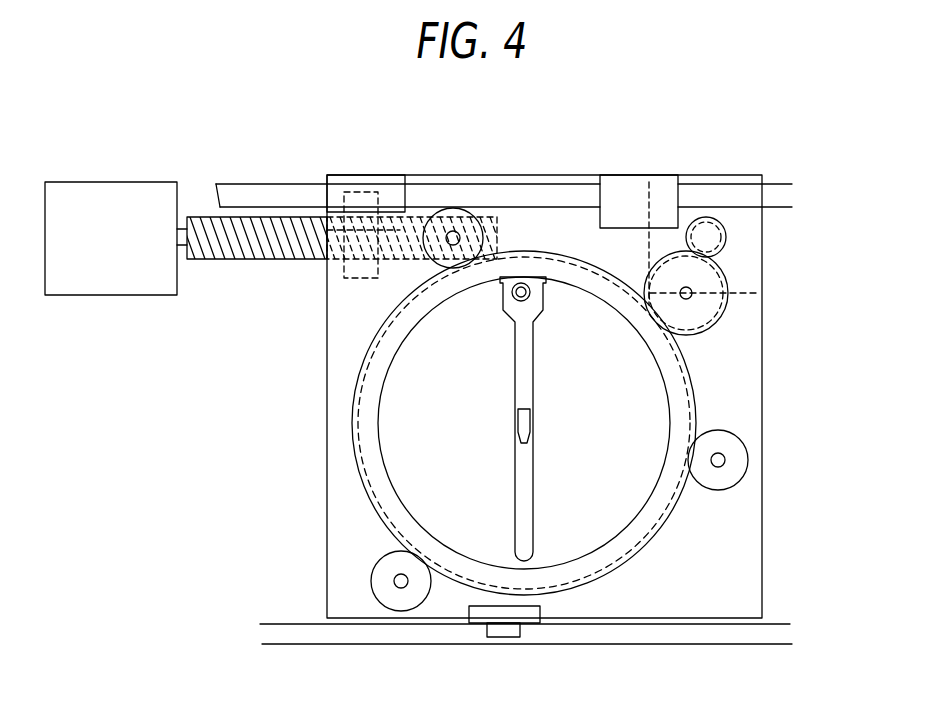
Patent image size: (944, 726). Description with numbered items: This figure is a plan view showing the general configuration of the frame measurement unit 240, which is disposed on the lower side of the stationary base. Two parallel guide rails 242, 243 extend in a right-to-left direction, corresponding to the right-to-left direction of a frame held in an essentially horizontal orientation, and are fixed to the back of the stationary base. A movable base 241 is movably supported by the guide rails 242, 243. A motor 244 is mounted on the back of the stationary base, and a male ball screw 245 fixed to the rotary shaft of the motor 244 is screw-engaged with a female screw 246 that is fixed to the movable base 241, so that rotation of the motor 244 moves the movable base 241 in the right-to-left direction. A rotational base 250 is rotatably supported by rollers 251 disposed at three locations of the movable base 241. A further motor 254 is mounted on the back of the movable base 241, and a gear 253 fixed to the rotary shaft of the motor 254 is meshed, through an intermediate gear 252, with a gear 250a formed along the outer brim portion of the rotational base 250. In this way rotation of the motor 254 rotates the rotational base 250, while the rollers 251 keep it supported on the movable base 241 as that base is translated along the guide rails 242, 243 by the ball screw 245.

The frame measurement unit 240 is at (238, 502).
The movable base 241 is at (745, 357).
The guide rail 242 is at (551, 192).
The guide rail 243 is at (602, 634).
The motor 244 is at (100, 216).
The male ball screw 245 is at (245, 259).
The female screw 246 is at (360, 284).
The rotational base 250 is at (683, 408).
The gear 250a is at (668, 527).
The roller 251 is at (453, 208).
The gear 252 is at (700, 308).
The gear 253 is at (706, 237).
The motor 254 is at (750, 278).